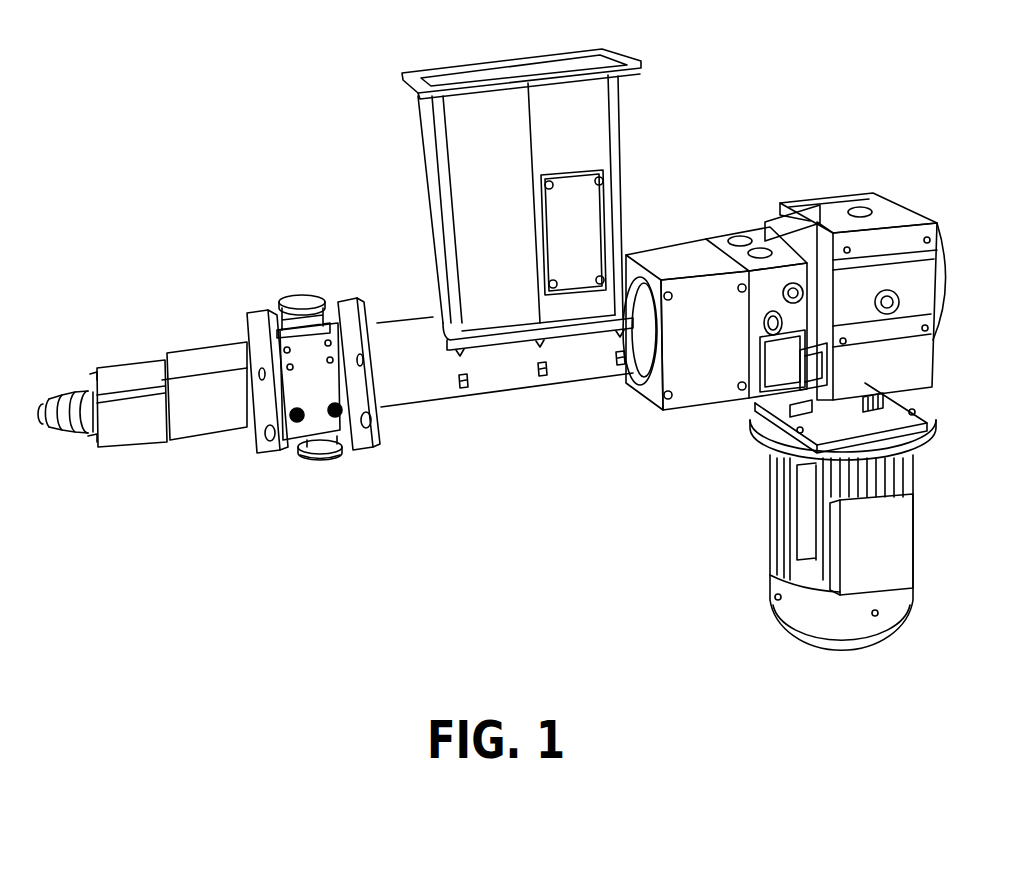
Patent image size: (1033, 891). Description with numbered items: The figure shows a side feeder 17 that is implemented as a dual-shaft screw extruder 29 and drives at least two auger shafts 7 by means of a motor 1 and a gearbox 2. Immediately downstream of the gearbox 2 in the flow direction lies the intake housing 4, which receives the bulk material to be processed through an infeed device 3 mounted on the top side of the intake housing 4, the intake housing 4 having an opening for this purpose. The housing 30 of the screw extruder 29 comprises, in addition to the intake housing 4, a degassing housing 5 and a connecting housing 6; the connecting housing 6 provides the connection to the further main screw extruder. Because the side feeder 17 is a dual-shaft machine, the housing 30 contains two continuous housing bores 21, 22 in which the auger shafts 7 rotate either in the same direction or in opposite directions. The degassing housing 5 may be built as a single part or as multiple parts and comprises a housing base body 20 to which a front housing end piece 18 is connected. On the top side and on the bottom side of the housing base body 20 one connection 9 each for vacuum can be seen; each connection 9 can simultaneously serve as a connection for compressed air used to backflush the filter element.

The motor 1 is at (773, 498).
The gearbox 2 is at (823, 213).
The infeed device 3 is at (427, 163).
The intake housing 4 is at (528, 374).
The degassing housing 5 is at (340, 458).
The connecting housing 6 is at (193, 426).
The auger shafts 7 is at (58, 440).
The connection for vacuum 9 is at (303, 295).
The side feeder 17 is at (252, 350).
The front housing end piece 18 is at (384, 441).
The housing base body 20 is at (296, 380).
The housing bore 21 is at (103, 361).
The housing bore 22 is at (83, 387).
The screw extruder 29 is at (278, 457).
The housing 30 is at (643, 538).